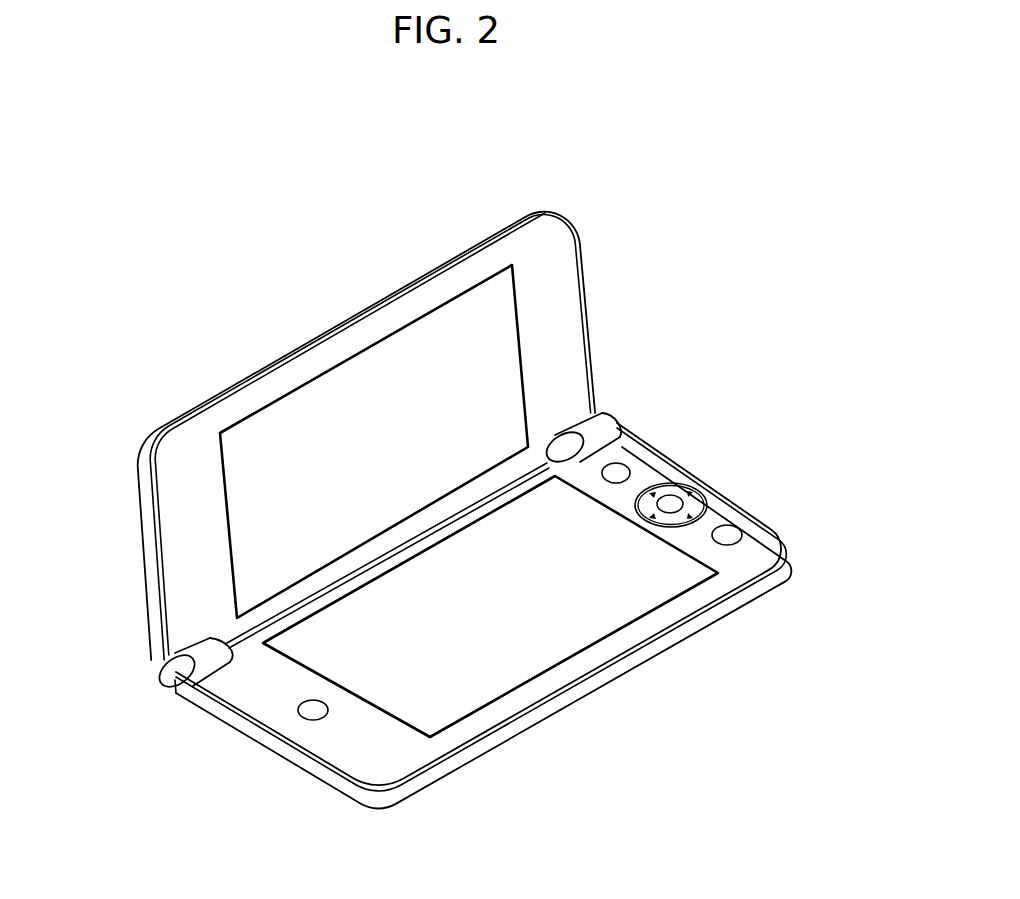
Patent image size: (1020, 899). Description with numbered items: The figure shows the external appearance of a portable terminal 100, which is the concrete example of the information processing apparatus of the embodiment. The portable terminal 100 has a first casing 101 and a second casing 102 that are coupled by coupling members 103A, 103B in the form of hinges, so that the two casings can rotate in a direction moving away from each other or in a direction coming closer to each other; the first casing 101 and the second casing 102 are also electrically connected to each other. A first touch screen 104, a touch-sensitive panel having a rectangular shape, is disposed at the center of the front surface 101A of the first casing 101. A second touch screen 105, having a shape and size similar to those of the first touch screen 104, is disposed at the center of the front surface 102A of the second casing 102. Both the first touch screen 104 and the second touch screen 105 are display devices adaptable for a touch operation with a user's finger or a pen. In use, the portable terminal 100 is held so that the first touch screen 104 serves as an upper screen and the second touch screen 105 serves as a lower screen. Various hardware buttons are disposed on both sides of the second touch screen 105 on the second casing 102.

The portable terminal 100 is at (567, 142).
The first casing 101 is at (466, 247).
The front surface of the first casing 101A is at (572, 284).
The first touch screen 104 is at (500, 365).
The coupling member 103A is at (606, 420).
The coupling member 103B is at (160, 668).
The second casing 102 is at (528, 722).
The front surface of the second casing 102A is at (614, 657).
The second touch screen 105 is at (640, 600).